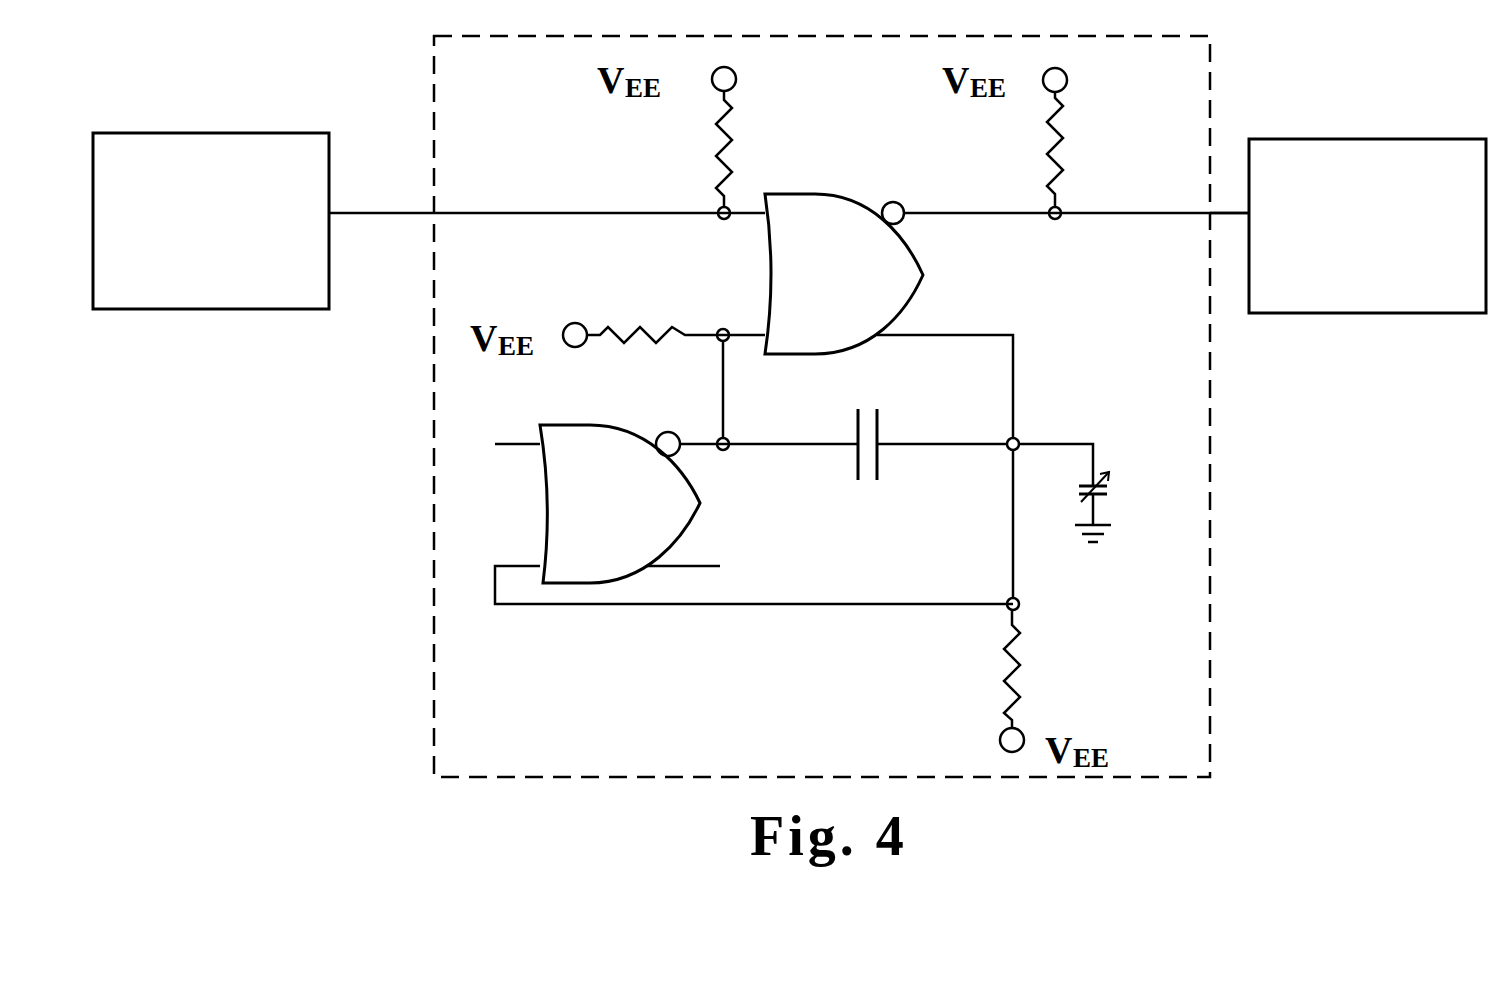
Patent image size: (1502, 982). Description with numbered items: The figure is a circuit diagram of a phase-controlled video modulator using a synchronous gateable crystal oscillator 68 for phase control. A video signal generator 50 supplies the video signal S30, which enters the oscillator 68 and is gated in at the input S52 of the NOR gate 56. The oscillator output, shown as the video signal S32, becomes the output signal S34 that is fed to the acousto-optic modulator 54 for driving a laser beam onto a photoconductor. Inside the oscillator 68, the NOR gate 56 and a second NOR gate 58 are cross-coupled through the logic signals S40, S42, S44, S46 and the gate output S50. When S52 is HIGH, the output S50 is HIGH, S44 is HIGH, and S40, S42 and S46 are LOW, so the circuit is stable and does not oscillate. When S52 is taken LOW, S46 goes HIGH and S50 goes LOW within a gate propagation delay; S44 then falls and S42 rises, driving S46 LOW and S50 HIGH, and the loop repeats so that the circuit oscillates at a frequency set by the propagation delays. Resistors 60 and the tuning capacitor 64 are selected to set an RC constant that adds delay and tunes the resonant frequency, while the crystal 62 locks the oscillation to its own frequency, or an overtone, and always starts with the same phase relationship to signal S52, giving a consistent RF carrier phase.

The video signal generator 50 is at (176, 309).
The acousto-optic modulator 54 is at (1372, 139).
The NOR gate 56 is at (845, 300).
The NOR gate 58 is at (620, 530).
The resistors 60 is at (718, 150).
The crystal 62 is at (858, 470).
The tuning capacitor 64 is at (1108, 486).
The synchronous gateable crystal oscillator 68 is at (1210, 583).
The video signal S30 is at (383, 213).
The video signal S32 is at (1107, 213).
The output signal S34 is at (1235, 213).
The logic signal S40 is at (745, 333).
The logic signal S42 is at (705, 444).
The logic signal S44 is at (513, 565).
The logic signal S46 is at (1009, 213).
The output of the NOR gate S50 is at (1013, 380).
The input signal S52 is at (748, 213).